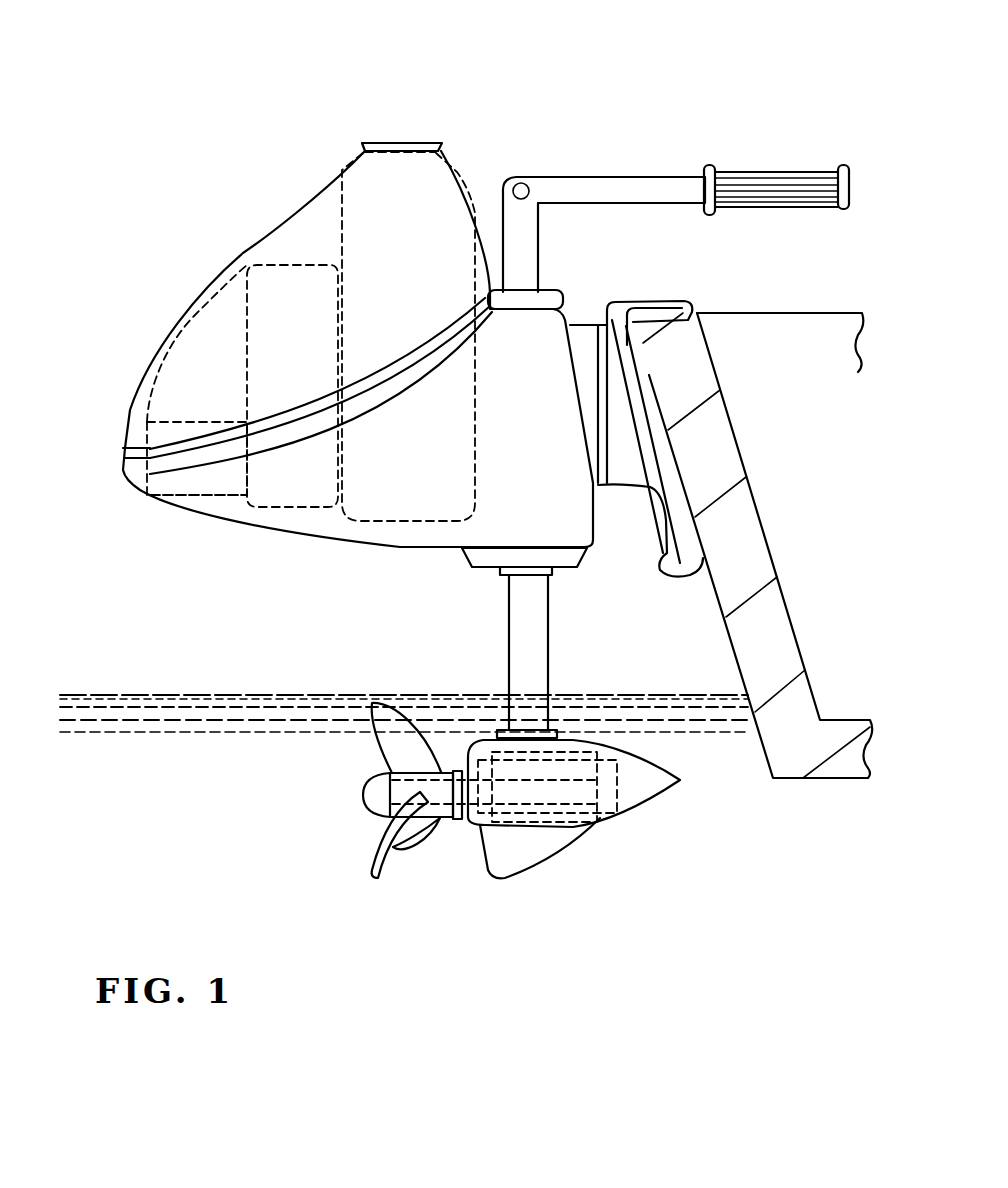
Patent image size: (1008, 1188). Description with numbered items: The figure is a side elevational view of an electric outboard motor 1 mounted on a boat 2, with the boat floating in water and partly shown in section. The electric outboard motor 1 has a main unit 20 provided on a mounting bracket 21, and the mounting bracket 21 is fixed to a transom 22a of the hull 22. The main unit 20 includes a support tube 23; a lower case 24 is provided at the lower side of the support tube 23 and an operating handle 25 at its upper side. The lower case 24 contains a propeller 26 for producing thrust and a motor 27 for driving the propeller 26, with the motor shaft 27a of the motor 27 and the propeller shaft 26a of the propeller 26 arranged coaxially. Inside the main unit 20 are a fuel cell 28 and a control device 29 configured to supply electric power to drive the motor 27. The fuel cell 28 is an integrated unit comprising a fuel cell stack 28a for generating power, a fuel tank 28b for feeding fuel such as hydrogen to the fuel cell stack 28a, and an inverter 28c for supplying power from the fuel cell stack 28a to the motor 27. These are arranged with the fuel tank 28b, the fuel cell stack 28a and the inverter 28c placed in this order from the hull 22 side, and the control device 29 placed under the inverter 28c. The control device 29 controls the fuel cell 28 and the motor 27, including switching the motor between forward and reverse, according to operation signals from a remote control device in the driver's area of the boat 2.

The electric outboard motor 1 is at (633, 59).
The boat 2 is at (842, 286).
The main unit 20 is at (316, 552).
The mounting bracket 21 is at (626, 474).
The hull 22 is at (817, 797).
The transom 22a is at (716, 433).
The support tube 23 is at (538, 605).
The lower case 24 is at (517, 857).
The operating handle 25 is at (640, 185).
The propeller 26 is at (402, 764).
The propeller shaft 26a is at (450, 812).
The motor 27 is at (600, 830).
The motor shaft 27a is at (575, 779).
The fuel cell 28 is at (299, 238).
The fuel cell stack 28a is at (246, 270).
The fuel tank 28b is at (440, 180).
The inverter 28c is at (196, 363).
The control device 29 is at (180, 482).